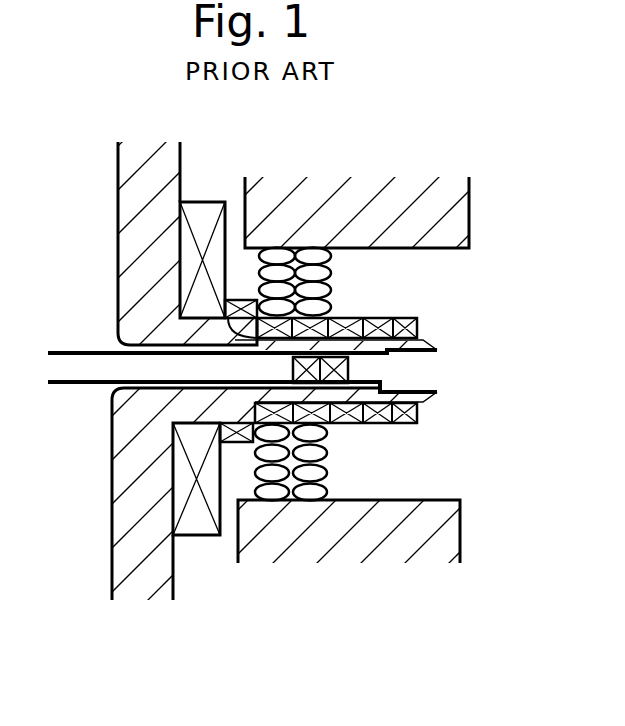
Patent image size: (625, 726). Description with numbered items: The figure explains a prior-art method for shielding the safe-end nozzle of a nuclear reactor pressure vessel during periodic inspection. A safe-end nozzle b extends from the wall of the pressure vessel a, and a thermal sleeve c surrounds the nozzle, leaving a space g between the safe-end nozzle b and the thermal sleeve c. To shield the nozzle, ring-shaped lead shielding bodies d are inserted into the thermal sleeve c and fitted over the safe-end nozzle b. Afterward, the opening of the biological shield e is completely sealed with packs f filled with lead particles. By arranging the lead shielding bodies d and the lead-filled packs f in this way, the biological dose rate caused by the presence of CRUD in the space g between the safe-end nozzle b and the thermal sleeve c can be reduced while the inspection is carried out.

The pressure vessel a is at (130, 260).
The safe-end nozzle b is at (240, 300).
The thermal sleeve c is at (383, 357).
The ring-shaped lead shielding bodies d is at (205, 210).
The biological shield e is at (455, 228).
The packs f is at (323, 272).
The space g is at (233, 322).